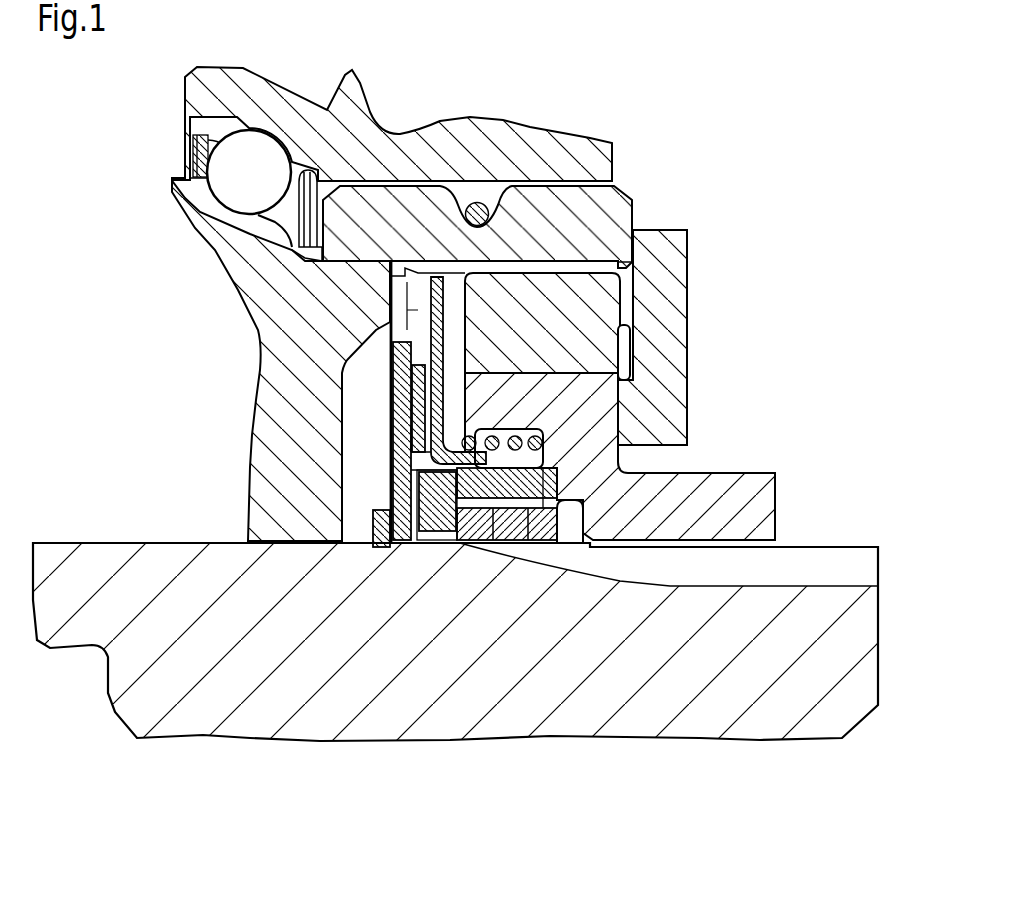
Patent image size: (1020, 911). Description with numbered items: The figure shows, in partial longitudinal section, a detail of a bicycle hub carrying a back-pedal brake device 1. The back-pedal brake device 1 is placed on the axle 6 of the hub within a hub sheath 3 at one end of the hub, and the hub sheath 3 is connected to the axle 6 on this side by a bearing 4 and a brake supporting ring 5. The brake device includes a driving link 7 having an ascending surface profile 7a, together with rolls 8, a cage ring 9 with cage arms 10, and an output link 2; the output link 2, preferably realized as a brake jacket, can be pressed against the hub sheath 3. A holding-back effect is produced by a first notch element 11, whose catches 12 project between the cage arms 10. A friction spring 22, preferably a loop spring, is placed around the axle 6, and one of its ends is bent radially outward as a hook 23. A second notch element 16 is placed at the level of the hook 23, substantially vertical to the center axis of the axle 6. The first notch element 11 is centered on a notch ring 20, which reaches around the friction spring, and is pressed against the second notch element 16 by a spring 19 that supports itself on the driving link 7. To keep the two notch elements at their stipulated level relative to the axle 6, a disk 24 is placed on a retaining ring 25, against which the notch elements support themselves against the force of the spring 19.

The back-pedal brake device 1 is at (639, 226).
The output link 2 is at (613, 198).
The hub sheath 3 is at (590, 147).
The bearing 4 is at (262, 148).
The brake supporting ring 5 is at (270, 507).
The axle 6 is at (588, 712).
The driving link 7 is at (762, 500).
The ascending surface profile 7a is at (592, 372).
The rolls 8 is at (603, 303).
The cage ring 9 is at (670, 360).
The cage arms 10 is at (418, 310).
The first notch element 11 is at (422, 365).
The catches 12 is at (437, 292).
The second notch element 16 is at (417, 397).
The spring 19 is at (540, 447).
The notch ring 20 is at (545, 480).
The friction spring 22 is at (507, 527).
The hook 23 is at (423, 487).
The disk 24 is at (398, 435).
The retaining ring 25 is at (382, 553).